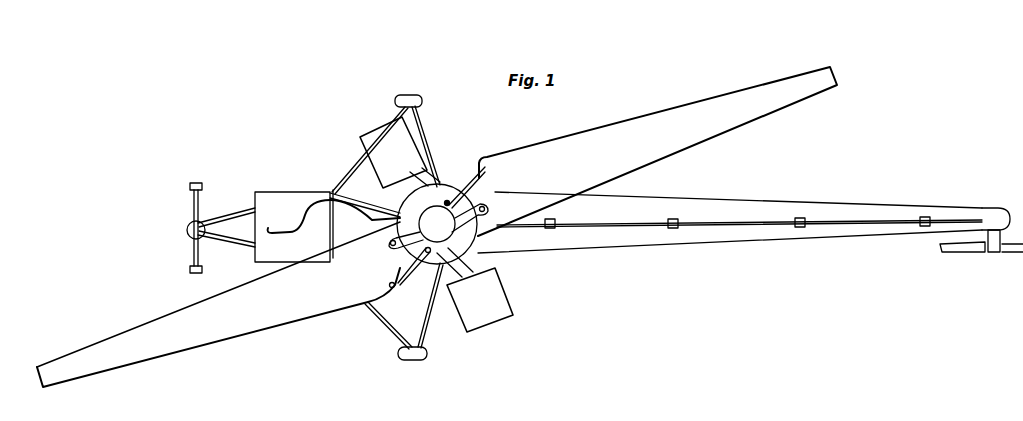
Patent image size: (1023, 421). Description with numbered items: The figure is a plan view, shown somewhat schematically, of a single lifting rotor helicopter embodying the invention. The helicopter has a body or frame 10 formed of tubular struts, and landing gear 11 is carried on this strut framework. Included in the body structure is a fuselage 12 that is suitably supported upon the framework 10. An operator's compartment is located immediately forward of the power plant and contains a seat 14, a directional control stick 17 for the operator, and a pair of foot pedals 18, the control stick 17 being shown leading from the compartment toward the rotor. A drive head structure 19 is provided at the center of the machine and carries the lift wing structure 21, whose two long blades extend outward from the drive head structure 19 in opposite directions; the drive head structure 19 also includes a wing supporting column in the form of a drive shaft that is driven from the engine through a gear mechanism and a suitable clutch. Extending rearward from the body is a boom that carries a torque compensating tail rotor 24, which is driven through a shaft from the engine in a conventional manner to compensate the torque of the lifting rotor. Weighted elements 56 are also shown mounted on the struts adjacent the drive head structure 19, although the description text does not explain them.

The boom/spar 10 is at (605, 251).
The strut 11 is at (422, 142).
The control rod 12 is at (745, 240).
The housing box 14 is at (303, 190).
The hose 17 is at (287, 226).
The vertical bar 18 is at (203, 186).
The hub 19 is at (438, 227).
The rotor blade 21 is at (533, 146).
The tail fin 24 is at (960, 252).
The counterweight box 56 is at (373, 138).